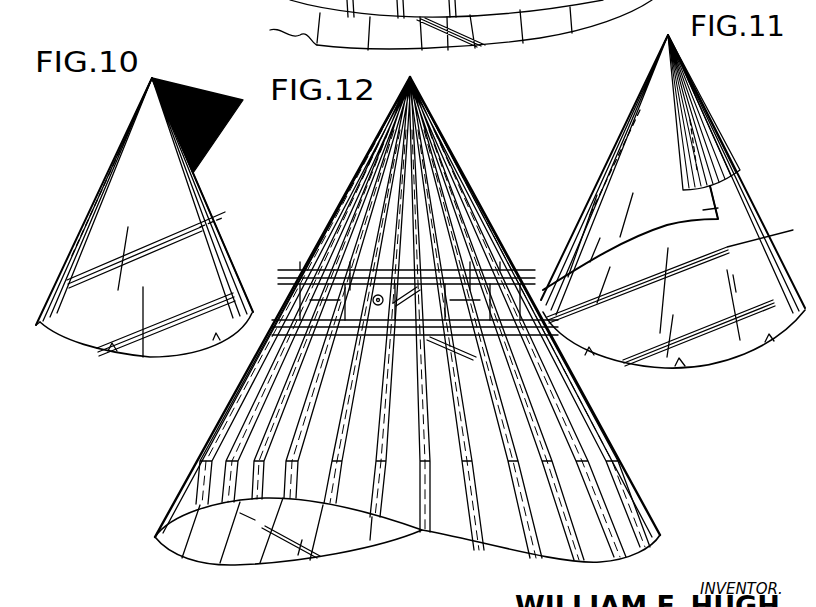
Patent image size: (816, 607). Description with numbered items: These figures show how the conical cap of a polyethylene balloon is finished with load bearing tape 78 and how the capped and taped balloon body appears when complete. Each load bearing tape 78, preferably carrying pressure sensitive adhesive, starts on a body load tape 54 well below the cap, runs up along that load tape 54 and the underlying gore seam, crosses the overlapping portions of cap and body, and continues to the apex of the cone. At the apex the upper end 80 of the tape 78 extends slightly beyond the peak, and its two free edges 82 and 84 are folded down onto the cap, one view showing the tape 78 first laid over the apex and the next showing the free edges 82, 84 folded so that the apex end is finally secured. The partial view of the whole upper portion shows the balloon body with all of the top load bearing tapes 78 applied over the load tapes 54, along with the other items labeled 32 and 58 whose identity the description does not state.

In FIG. 12, the conical shell body 32 is at (407, 535).
In FIG. 12, the load tape 54 is at (622, 506).
In FIG. 10, the circumferential stiffening band 58 is at (133, 335).
In FIG. 11, the circumferential stiffening band 58 is at (712, 333).
In FIG. 12, the circumferential stiffening band 58 is at (370, 228).
In FIG. 10, the load bearing tape 78 is at (95, 203).
In FIG. 11, the load bearing tape 78 is at (592, 194).
In FIG. 12, the load bearing tape 78 is at (347, 229).
In FIG. 10, the upper end of the tape 80 is at (150, 80).
In FIG. 11, the upper end of the tape 80 is at (662, 37).
In FIG. 10, the free edge 82 is at (128, 140).
In FIG. 11, the free edge 82 is at (712, 208).
In FIG. 10, the free edge 84 is at (212, 145).
In FIG. 11, the free edge 84 is at (690, 173).